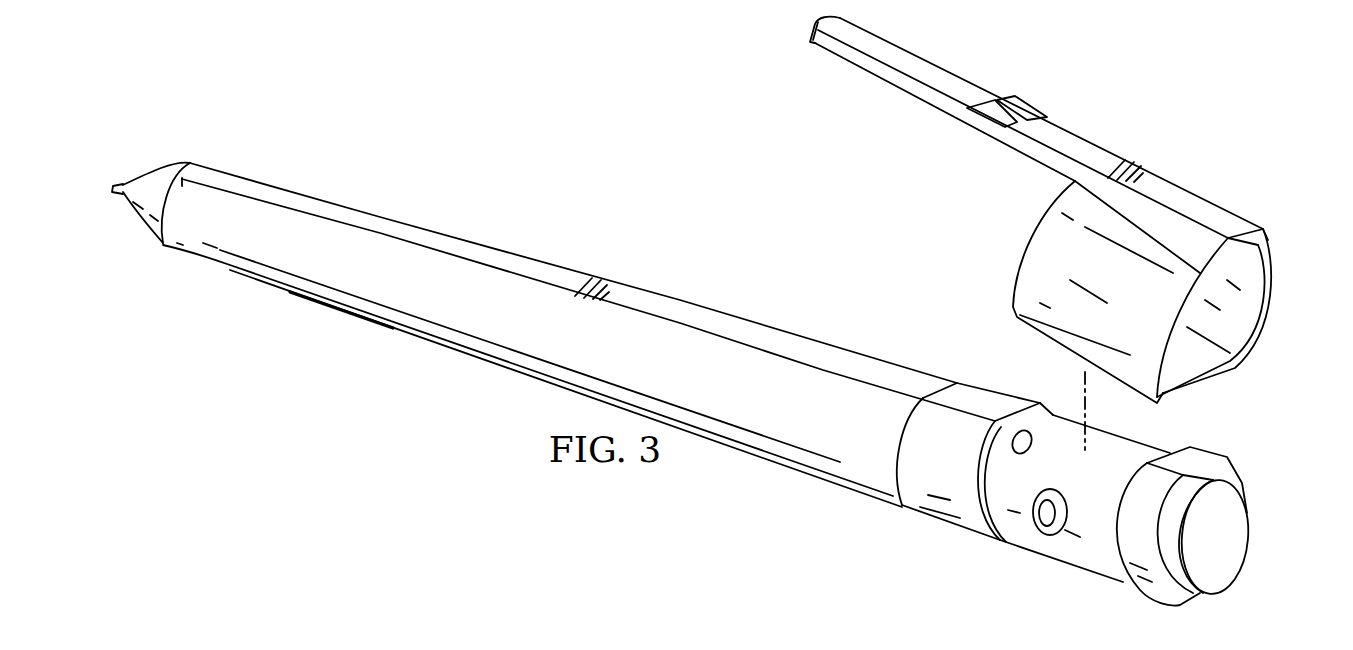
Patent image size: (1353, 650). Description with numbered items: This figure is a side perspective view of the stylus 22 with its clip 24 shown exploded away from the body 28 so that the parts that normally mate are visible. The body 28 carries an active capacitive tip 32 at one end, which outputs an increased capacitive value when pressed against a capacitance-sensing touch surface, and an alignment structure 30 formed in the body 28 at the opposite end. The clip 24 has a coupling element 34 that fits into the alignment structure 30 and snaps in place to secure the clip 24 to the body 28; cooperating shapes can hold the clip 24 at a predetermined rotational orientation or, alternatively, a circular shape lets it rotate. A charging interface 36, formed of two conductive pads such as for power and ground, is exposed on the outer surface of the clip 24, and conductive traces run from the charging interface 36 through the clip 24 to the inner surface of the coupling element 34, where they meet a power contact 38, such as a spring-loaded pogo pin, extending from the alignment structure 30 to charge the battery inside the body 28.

The stylus 22 is at (688, 384).
The clip 24 is at (1055, 210).
The body 28 is at (725, 312).
The alignment structure 30 is at (1023, 440).
The active capacitive tip 32 is at (118, 182).
The coupling element 34 is at (1247, 323).
The charging interface 36 is at (987, 100).
The power contact 38 is at (1042, 517).